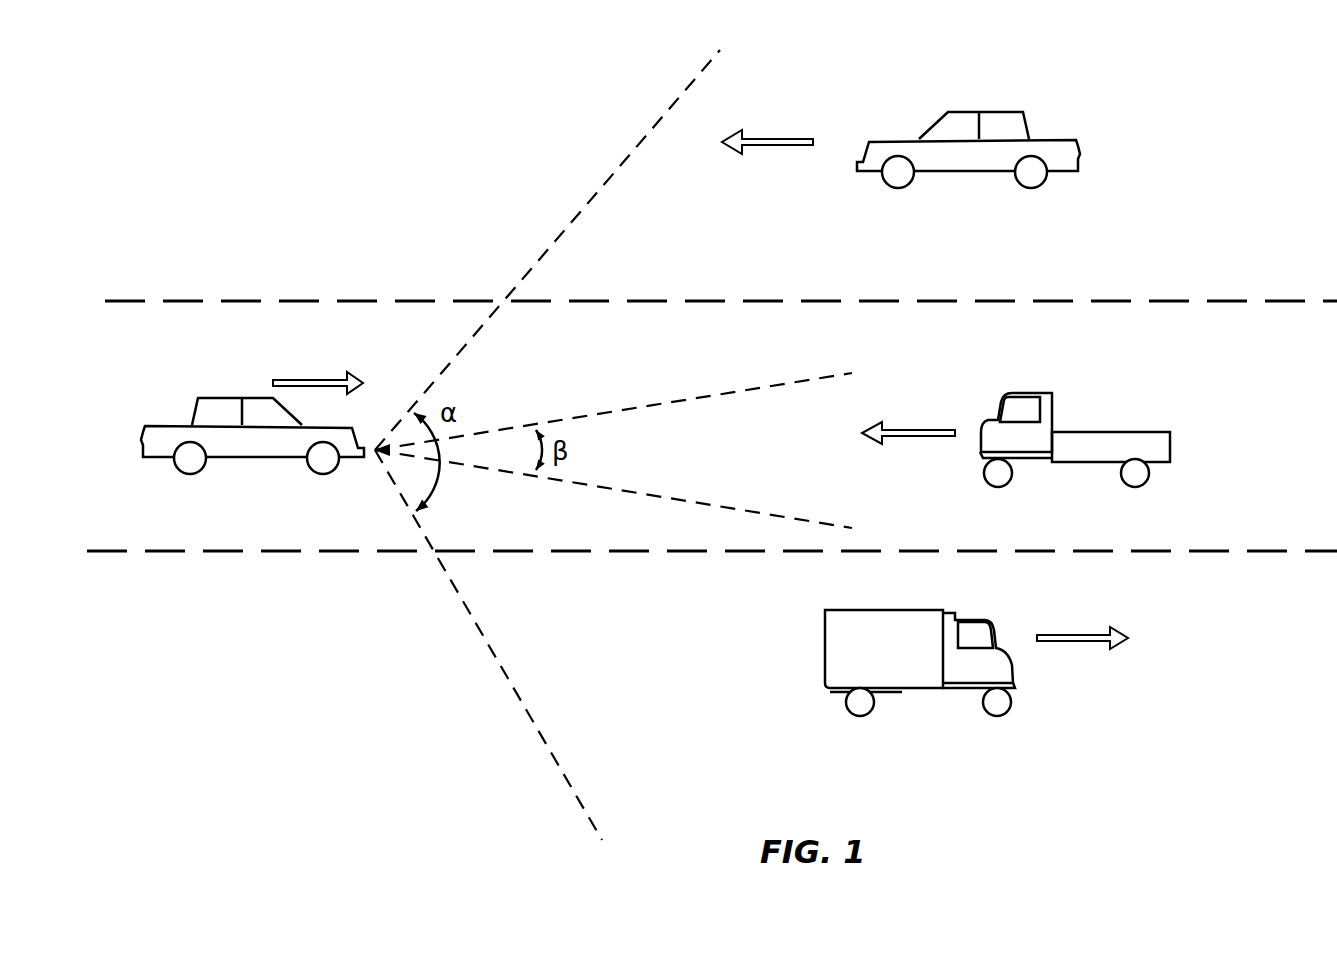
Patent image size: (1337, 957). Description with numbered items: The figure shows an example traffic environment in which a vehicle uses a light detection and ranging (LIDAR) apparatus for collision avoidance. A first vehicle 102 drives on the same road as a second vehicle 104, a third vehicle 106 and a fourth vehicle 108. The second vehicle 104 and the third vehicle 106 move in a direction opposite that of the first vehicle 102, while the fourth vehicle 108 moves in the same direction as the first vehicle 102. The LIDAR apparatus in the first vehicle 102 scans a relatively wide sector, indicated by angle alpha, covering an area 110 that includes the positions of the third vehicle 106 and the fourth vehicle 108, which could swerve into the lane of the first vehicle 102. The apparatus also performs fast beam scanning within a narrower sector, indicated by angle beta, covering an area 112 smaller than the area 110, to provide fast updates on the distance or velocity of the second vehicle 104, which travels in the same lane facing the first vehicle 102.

The first vehicle 102 is at (228, 396).
The second vehicle 104 is at (1108, 432).
The third vehicle 106 is at (1005, 110).
The fourth vehicle 108 is at (893, 610).
The area 110 is at (603, 245).
The area 112 is at (688, 425).